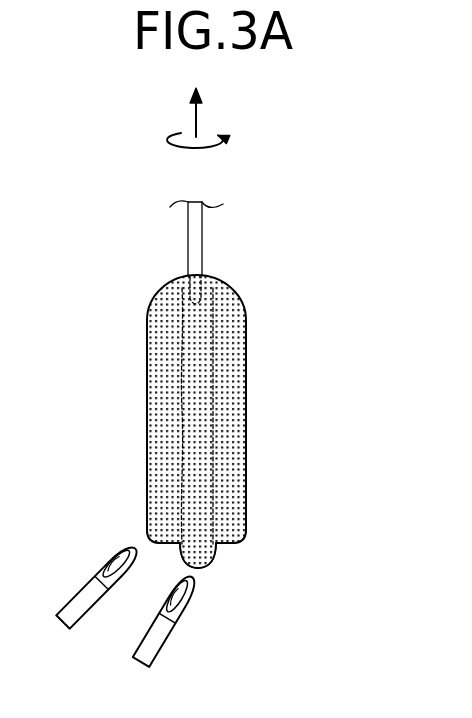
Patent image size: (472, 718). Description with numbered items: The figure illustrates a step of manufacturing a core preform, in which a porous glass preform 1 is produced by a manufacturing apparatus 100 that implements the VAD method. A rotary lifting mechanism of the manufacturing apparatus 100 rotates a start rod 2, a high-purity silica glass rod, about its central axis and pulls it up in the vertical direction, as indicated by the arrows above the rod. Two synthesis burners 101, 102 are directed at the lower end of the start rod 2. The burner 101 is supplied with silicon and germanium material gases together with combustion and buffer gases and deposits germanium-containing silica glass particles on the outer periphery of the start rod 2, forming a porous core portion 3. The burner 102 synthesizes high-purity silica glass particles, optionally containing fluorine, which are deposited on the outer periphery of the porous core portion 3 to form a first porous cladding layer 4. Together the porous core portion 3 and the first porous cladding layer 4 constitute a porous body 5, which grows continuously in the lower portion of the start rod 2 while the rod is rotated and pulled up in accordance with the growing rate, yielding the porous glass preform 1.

The manufacturing apparatus 100 is at (257, 359).
The porous glass preform 1 is at (278, 361).
The start rod 2 is at (203, 239).
The porous core portion 3 is at (203, 559).
The first porous cladding layer 4 is at (225, 528).
The porous body 5 is at (288, 572).
The burner 101 is at (175, 629).
The burner 102 is at (88, 573).